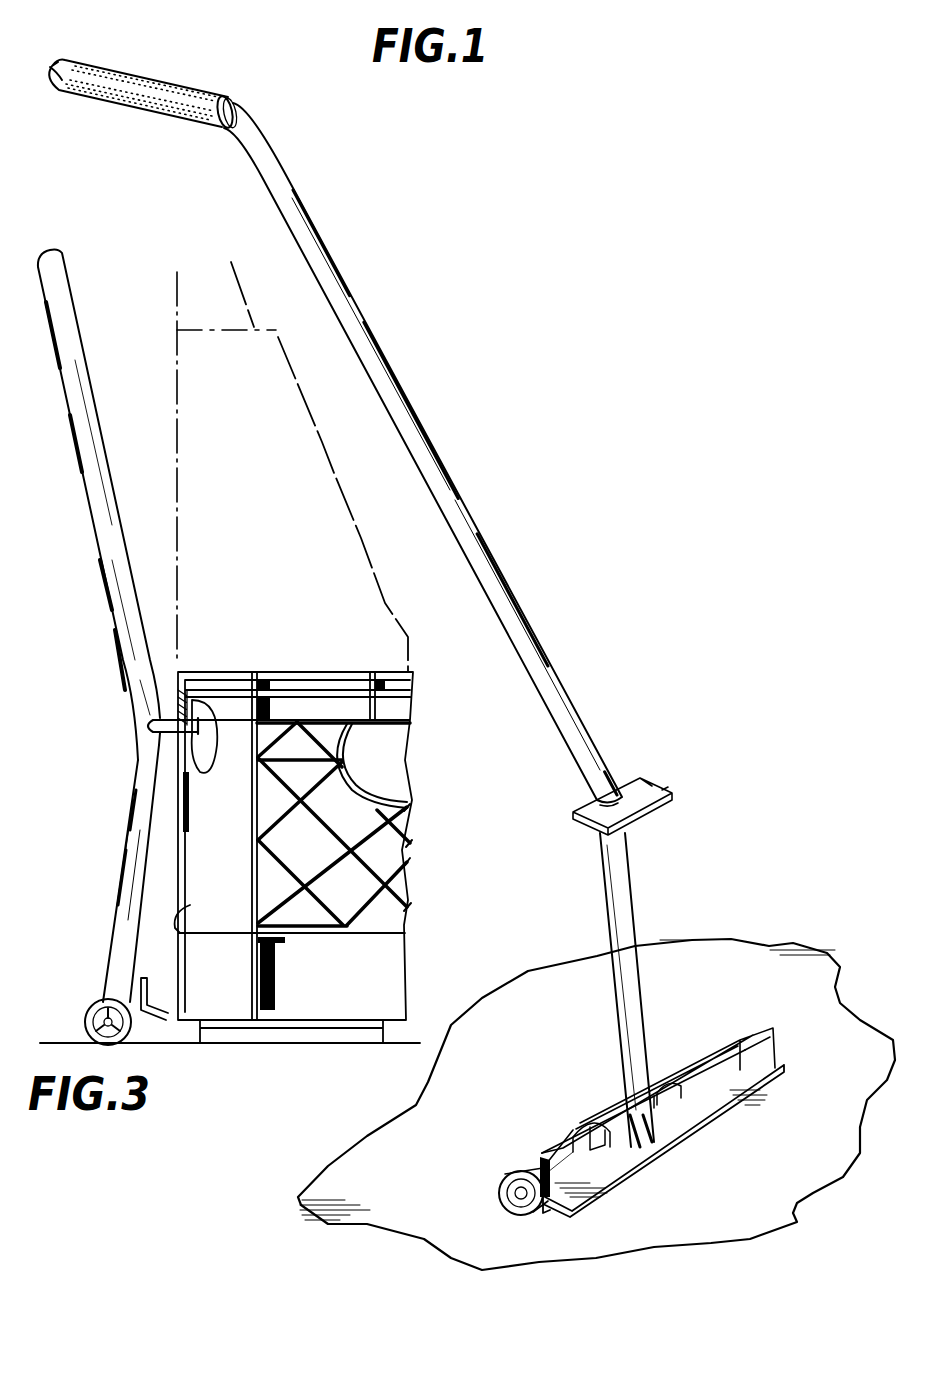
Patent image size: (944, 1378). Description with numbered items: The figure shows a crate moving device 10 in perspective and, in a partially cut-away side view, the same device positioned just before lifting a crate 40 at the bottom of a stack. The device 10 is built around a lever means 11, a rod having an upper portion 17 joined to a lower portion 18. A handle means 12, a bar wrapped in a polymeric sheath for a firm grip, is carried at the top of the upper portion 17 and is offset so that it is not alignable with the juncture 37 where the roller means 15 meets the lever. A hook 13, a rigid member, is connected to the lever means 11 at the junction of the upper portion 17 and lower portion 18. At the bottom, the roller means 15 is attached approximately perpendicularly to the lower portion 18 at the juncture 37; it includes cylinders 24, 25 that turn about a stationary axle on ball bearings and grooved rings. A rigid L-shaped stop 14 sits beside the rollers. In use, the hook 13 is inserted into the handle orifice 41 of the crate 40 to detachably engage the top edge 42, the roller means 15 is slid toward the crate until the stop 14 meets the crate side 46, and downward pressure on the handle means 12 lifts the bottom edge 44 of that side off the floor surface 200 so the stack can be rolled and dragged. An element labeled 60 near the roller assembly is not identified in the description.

In FIG. 1, the device 10 is at (372, 320).
In FIG. 3, the device 10 is at (99, 504).
In FIG. 1, the lever means 11 is at (447, 465).
In FIG. 1, the handle means 12 is at (145, 72).
In FIG. 1, the hook 13 is at (647, 782).
In FIG. 3, the hook 13 is at (153, 650).
In FIG. 1, the stop 14 is at (790, 1073).
In FIG. 3, the stop 14 is at (150, 995).
In FIG. 1, the roller means 15 is at (552, 1122).
In FIG. 3, the roller means 15 is at (84, 988).
In FIG. 1, the upper portion 17 is at (562, 724).
In FIG. 1, the lower portion 18 is at (600, 889).
In FIG. 3, the lower portion 18 is at (131, 873).
In FIG. 1, the cylinder 24 is at (704, 1055).
In FIG. 1, the cylinder 25 is at (520, 1163).
In FIG. 1, the juncture 37 is at (654, 1067).
In FIG. 3, the crate 40 is at (350, 1015).
In FIG. 3, the handle orifice 41 is at (185, 752).
In FIG. 3, the top edge 42 is at (193, 717).
In FIG. 3, the bottom edge 44 is at (218, 1035).
In FIG. 3, the crate side 46 is at (177, 927).
In FIG. 1, the mounting bracket 60 is at (619, 1113).
In FIG. 1, the floor surface 200 is at (790, 948).
In FIG. 3, the floor surface 200 is at (345, 1111).